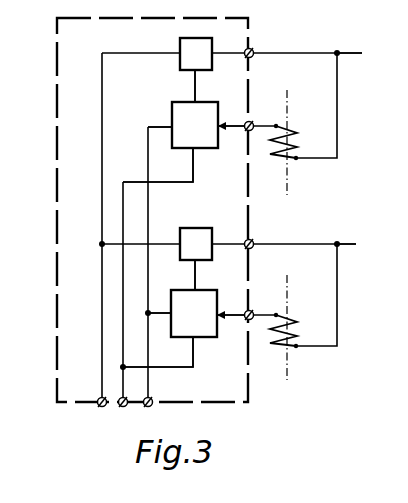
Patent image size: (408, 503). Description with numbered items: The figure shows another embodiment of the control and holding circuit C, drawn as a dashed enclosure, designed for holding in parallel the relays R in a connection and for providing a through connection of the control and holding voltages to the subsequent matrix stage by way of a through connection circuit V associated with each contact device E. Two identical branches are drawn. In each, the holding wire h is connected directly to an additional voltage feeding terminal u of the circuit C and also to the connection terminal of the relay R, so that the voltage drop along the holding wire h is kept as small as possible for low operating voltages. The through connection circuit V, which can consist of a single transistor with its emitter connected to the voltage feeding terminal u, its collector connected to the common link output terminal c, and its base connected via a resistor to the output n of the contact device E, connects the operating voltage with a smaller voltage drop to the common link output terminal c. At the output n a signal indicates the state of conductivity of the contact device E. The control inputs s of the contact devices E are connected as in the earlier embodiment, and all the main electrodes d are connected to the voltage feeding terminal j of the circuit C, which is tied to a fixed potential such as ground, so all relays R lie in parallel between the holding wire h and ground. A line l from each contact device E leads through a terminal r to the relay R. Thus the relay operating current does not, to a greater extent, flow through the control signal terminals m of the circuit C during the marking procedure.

The control and holding circuit C is at (57, 79).
The through connection circuit V is at (180, 46).
The contact device E is at (205, 149).
The output of the contact device n is at (195, 100).
The control input s is at (170, 126).
The main electrode d is at (192, 150).
The output line l is at (222, 126).
The voltage feeding terminal u is at (253, 52).
The terminal r is at (253, 124).
The holding wire h is at (345, 54).
The relay R is at (299, 136).
The common link output terminal c is at (101, 407).
The voltage feeding terminal j is at (122, 407).
The control signal terminal m is at (148, 407).